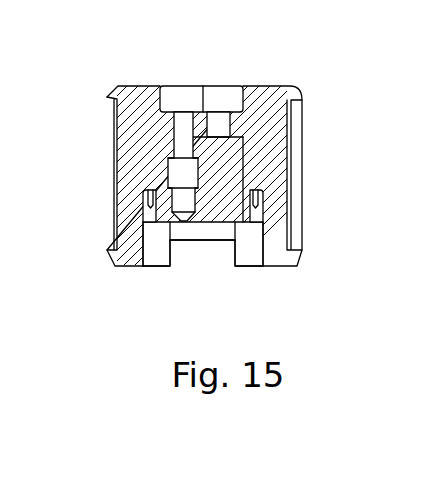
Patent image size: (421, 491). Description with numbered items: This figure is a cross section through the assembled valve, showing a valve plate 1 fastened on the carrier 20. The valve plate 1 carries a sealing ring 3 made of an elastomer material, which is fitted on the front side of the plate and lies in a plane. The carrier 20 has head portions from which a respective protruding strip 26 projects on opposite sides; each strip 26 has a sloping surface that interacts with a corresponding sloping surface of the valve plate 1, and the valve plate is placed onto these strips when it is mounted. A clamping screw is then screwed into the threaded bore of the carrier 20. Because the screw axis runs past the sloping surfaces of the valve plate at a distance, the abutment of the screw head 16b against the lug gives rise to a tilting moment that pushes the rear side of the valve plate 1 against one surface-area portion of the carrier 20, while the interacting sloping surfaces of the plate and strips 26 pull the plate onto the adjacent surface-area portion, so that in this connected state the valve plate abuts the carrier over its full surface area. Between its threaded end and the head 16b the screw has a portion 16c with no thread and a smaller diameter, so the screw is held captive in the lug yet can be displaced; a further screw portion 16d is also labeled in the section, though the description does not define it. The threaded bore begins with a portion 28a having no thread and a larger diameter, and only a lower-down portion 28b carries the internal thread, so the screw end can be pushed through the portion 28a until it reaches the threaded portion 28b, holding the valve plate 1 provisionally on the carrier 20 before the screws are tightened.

The valve plate 1 is at (112, 294).
The sealing ring 3 is at (113, 94).
The head of clamping screw 16b is at (183, 97).
The unthreaded portion of clamping screw 16c is at (185, 140).
The contact pin enlarged section 16d is at (181, 175).
The carrier 20 is at (200, 262).
The protruding strip 26 is at (155, 218).
The unthreaded portion of threaded bore 28a is at (207, 136).
The threaded portion of threaded bore 28b is at (246, 137).